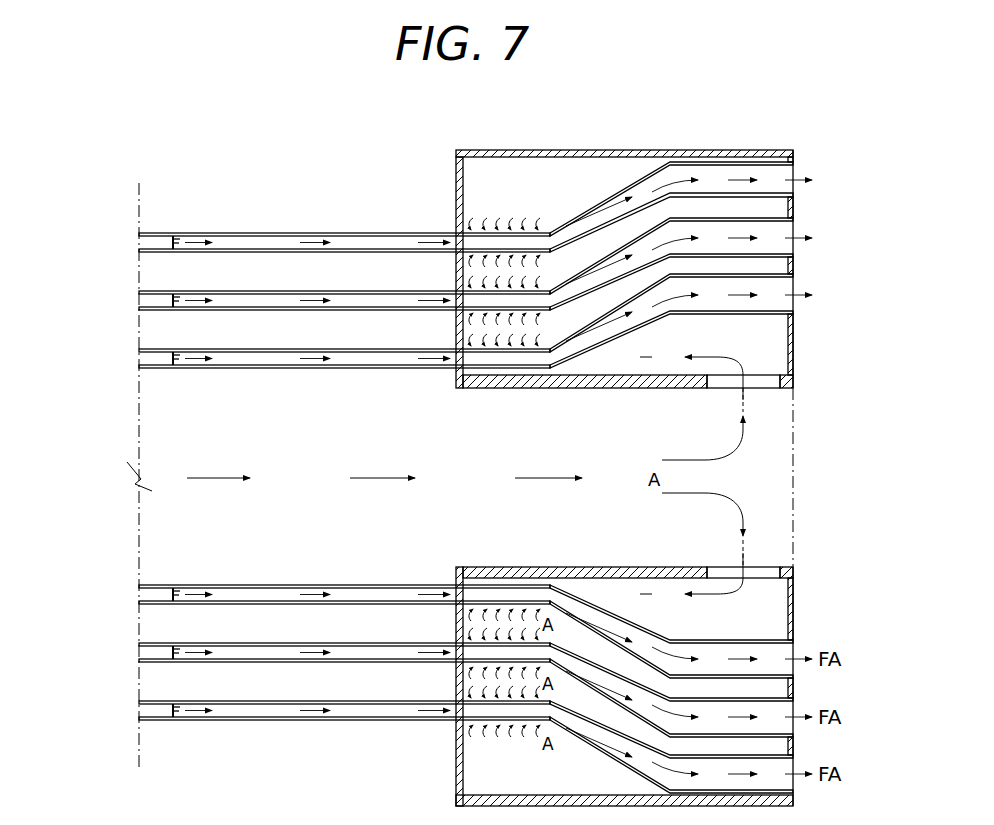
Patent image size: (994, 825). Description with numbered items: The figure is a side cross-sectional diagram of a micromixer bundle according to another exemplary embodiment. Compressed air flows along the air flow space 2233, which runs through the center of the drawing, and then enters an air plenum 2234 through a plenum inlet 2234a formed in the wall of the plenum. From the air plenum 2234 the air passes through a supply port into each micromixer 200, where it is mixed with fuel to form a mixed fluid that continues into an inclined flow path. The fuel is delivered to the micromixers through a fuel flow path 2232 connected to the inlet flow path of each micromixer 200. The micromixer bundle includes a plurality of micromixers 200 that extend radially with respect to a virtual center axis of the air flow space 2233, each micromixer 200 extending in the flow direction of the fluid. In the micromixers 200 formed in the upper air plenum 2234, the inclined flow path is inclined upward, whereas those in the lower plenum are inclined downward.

The micromixer 200 is at (577, 200).
The air plenum 2234 is at (584, 180).
The plenum inlet 2234a is at (755, 384).
The air flow space 2233 is at (203, 412).
The fuel flow path 2232 is at (236, 597).